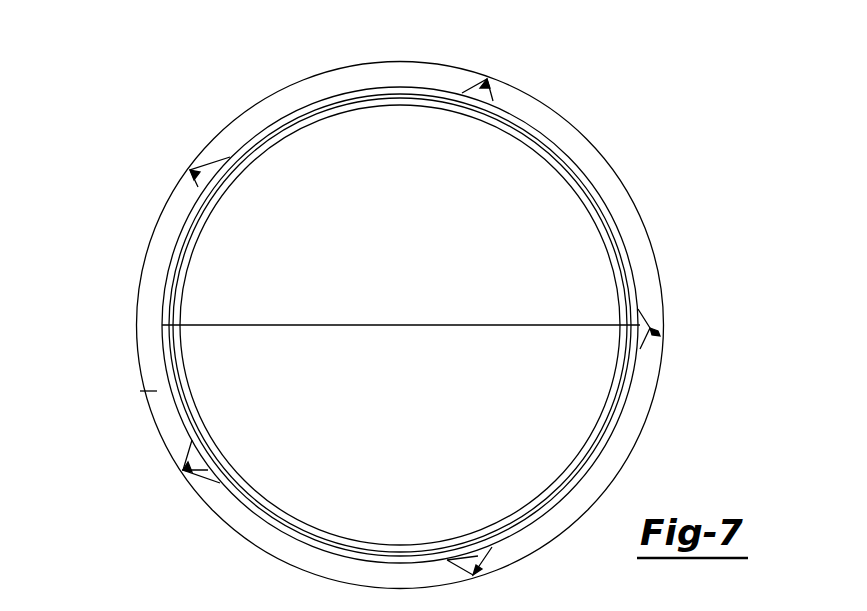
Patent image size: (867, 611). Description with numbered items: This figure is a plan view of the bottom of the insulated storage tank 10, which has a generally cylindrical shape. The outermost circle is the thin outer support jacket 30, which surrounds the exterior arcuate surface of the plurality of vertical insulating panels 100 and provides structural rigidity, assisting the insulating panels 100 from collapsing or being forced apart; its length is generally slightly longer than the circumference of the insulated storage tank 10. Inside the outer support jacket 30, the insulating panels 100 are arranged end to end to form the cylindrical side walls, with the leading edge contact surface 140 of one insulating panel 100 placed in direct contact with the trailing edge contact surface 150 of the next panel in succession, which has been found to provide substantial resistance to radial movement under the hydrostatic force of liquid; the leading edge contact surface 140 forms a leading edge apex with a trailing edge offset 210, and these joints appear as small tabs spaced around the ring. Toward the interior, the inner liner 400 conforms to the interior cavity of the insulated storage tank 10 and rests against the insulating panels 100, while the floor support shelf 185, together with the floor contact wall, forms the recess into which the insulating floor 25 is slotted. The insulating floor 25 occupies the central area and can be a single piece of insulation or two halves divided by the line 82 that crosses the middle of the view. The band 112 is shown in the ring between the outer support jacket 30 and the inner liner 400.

The insulated storage tank 10 is at (648, 137).
The insulating floor 25 is at (205, 297).
The outer support jacket 30 is at (638, 213).
The line 82 is at (318, 332).
The insulating panel 100 is at (150, 390).
The inner band 112 is at (430, 75).
The leading edge contact surface 140 is at (463, 92).
The trailing edge contact surface 150 is at (200, 174).
The floor support shelf 185 is at (342, 97).
The trailing edge offset 210 is at (488, 79).
The inner liner 400 is at (277, 137).